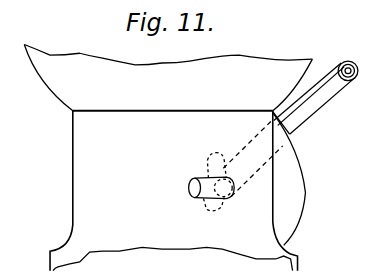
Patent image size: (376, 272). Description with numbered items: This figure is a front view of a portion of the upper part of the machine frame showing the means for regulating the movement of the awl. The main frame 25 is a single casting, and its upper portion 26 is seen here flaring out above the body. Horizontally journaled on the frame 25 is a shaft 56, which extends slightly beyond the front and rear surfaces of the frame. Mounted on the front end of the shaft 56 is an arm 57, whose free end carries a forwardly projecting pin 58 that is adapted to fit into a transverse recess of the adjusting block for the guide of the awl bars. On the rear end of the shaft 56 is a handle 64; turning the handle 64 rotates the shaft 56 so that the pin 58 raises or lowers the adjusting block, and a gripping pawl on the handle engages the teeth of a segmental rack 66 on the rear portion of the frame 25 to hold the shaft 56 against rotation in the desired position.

The upper portion of the frame 26 is at (168, 77).
The main frame 25 is at (174, 191).
The segmental rack 66 is at (293, 195).
The handle 64 is at (327, 94).
The pin 58 is at (192, 189).
The shaft 56 is at (228, 199).
The arm 57 is at (205, 203).